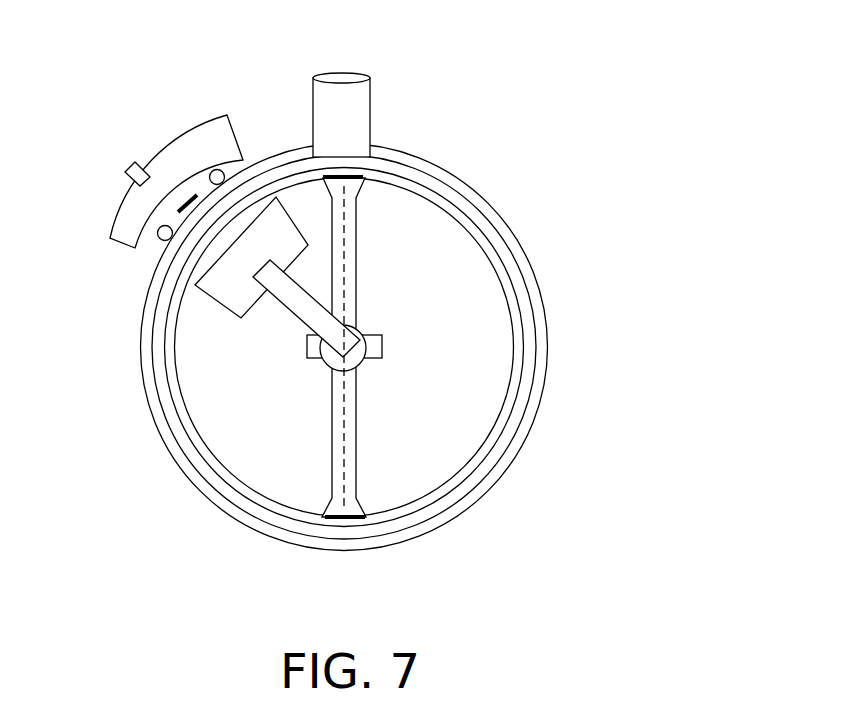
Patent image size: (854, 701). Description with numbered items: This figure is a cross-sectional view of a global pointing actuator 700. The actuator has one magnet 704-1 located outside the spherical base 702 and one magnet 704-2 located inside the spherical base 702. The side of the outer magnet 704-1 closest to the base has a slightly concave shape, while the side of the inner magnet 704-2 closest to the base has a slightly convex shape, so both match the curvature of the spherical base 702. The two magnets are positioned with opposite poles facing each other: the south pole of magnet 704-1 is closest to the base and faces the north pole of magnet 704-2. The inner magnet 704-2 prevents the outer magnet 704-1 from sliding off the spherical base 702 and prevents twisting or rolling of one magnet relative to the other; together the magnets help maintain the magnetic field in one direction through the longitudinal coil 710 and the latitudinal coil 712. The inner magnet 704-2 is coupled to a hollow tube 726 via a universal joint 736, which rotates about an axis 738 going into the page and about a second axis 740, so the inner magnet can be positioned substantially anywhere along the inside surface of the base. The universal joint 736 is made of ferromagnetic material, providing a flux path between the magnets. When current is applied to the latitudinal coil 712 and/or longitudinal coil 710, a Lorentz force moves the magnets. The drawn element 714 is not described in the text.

The global pointing actuator 700 is at (426, 70).
The spherical base 702 is at (518, 363).
The magnet 704-1 is at (218, 152).
The magnet 704-2 is at (213, 270).
The longitudinal coil 710 is at (462, 493).
The latitudinal coil 712 is at (190, 483).
The sensor 714 is at (125, 183).
The hollow tube 726 is at (336, 397).
The universal joint 736 is at (370, 312).
The axis 738 is at (327, 381).
The axis 740 is at (348, 380).